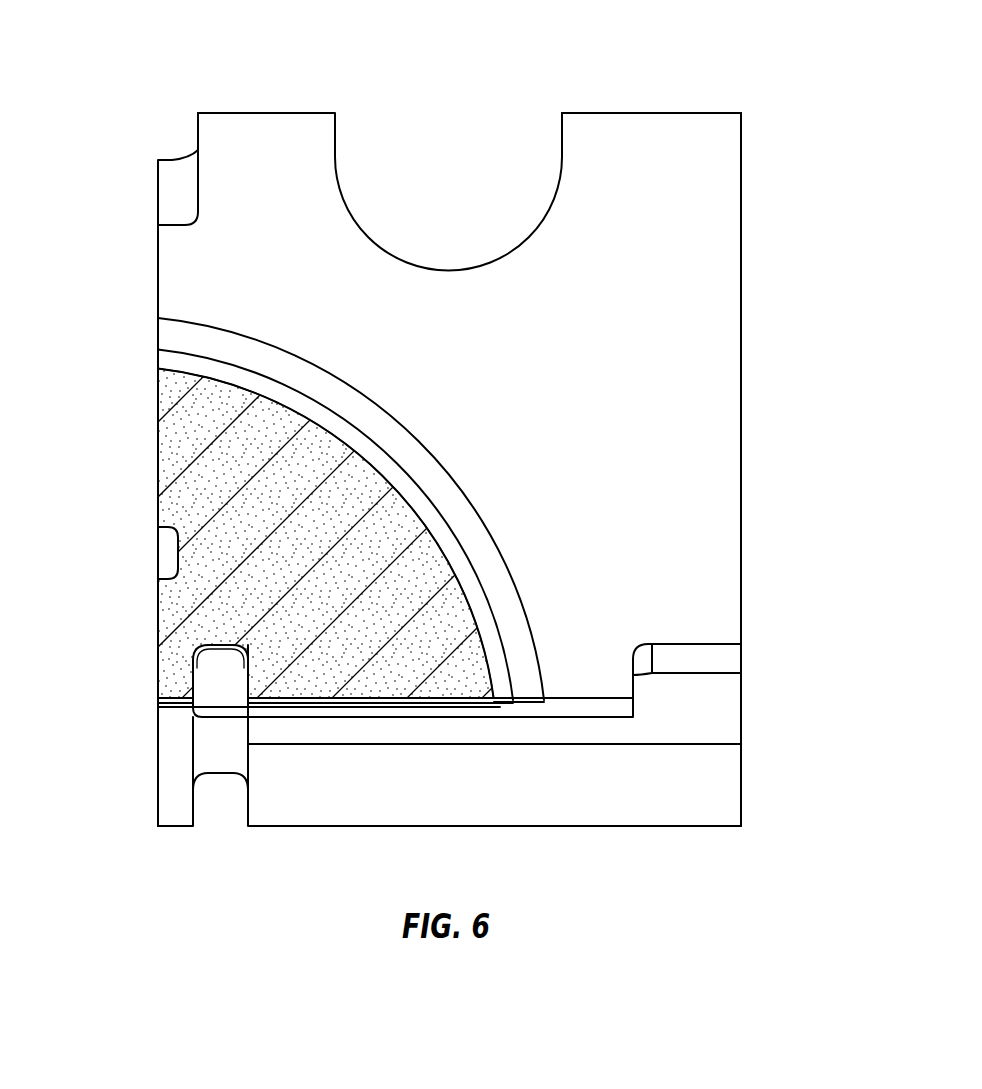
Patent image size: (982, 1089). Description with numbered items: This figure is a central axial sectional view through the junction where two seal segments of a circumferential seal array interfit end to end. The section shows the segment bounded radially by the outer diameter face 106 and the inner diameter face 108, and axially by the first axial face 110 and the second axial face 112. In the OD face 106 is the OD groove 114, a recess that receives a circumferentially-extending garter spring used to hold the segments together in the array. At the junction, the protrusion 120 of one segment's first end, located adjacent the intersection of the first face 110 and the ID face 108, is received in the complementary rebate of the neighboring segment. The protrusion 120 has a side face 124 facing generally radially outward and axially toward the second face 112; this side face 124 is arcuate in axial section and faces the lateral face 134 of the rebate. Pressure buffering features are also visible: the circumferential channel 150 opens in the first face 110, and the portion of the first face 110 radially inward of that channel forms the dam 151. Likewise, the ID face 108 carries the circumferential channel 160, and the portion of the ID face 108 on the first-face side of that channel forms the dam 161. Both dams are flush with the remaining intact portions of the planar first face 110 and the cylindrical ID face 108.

The outer diameter (OD) face 106 is at (650, 112).
The inner diameter (ID) face 108 is at (605, 790).
The first axial face 110 is at (158, 292).
The second axial face 112 is at (741, 273).
The outer diameter (OD) groove 114 is at (453, 124).
The protrusion 120 is at (395, 557).
The side face 124 is at (400, 482).
The lateral face 134 is at (499, 618).
The circumferential channel 150 is at (169, 551).
The dam 151 is at (158, 632).
The circumferential channel 160 is at (221, 677).
The dam 161 is at (185, 702).